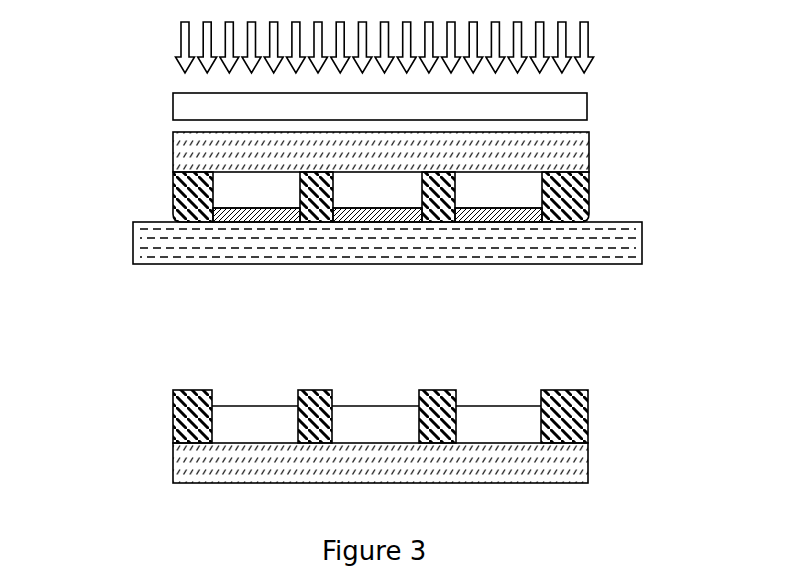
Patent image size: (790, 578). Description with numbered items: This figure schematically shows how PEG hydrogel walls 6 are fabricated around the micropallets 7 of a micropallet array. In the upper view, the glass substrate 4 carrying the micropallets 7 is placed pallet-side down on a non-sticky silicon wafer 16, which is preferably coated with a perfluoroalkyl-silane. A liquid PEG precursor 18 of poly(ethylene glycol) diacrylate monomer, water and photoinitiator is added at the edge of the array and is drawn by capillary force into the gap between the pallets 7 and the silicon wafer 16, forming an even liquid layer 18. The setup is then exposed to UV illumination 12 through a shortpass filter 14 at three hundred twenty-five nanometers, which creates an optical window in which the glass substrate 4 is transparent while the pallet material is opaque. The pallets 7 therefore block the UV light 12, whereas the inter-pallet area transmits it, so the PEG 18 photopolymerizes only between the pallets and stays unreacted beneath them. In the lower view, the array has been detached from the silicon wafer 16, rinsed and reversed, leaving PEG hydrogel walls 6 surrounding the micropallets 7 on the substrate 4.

The substrate 4 is at (173, 150).
The PEG hydrogel walls 6 is at (173, 208).
The micropallets 7 is at (247, 198).
The UV illumination 12 is at (590, 35).
The shortpass filter 14 is at (588, 104).
The silicon wafer 16 is at (642, 246).
The liquid PEG precursor 18 is at (500, 208).